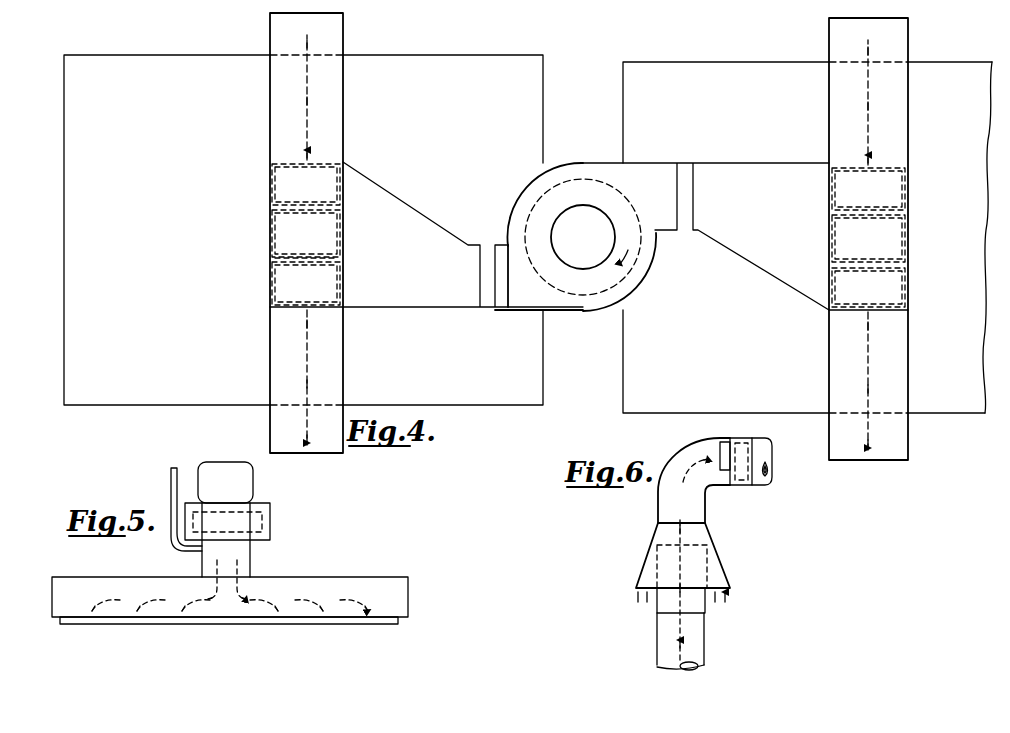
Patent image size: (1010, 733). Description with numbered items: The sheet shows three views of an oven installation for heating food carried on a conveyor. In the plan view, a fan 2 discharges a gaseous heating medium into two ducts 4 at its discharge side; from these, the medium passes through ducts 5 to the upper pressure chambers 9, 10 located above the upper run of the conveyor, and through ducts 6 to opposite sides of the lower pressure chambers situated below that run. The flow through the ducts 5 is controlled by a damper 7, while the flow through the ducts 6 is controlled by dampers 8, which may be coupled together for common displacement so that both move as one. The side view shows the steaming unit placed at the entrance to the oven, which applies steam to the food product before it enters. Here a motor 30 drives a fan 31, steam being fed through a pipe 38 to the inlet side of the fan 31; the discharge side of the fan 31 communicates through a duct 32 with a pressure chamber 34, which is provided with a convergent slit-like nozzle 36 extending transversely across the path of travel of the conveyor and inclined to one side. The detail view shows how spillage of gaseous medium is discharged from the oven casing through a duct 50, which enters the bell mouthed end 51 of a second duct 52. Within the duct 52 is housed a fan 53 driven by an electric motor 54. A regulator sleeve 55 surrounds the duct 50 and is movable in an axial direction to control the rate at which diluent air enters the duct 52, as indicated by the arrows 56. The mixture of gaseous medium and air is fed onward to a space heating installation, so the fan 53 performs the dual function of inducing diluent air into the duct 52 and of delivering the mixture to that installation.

In FIG. 4, the fan 2 is at (614, 193).
In FIG. 4, the ducts 4 is at (398, 215).
In FIG. 4, the ducts 5 is at (280, 243).
In FIG. 4, the ducts 6 is at (285, 97).
In FIG. 4, the damper 7 is at (270, 249).
In FIG. 4, the dampers 8 is at (285, 180).
In FIG. 4, the upper pressure chamber 9 is at (203, 70).
In FIG. 4, the upper pressure chamber 10 is at (717, 75).
In FIG. 5, the motor 30 is at (245, 481).
In FIG. 5, the fan 31 is at (270, 510).
In FIG. 5, the duct 32 is at (248, 558).
In FIG. 5, the pressure chamber 34 is at (343, 585).
In FIG. 5, the nozzle 36 is at (355, 624).
In FIG. 5, the pipe 38 is at (171, 472).
In FIG. 6, the duct 50 is at (700, 656).
In FIG. 6, the bell mouthed end 51 is at (656, 537).
In FIG. 6, the second duct 52 is at (683, 460).
In FIG. 6, the fan 53 is at (760, 438).
In FIG. 6, the electric motor 54 is at (725, 450).
In FIG. 6, the regulator sleeve 55 is at (700, 557).
In FIG. 6, the arrows 56 is at (727, 598).